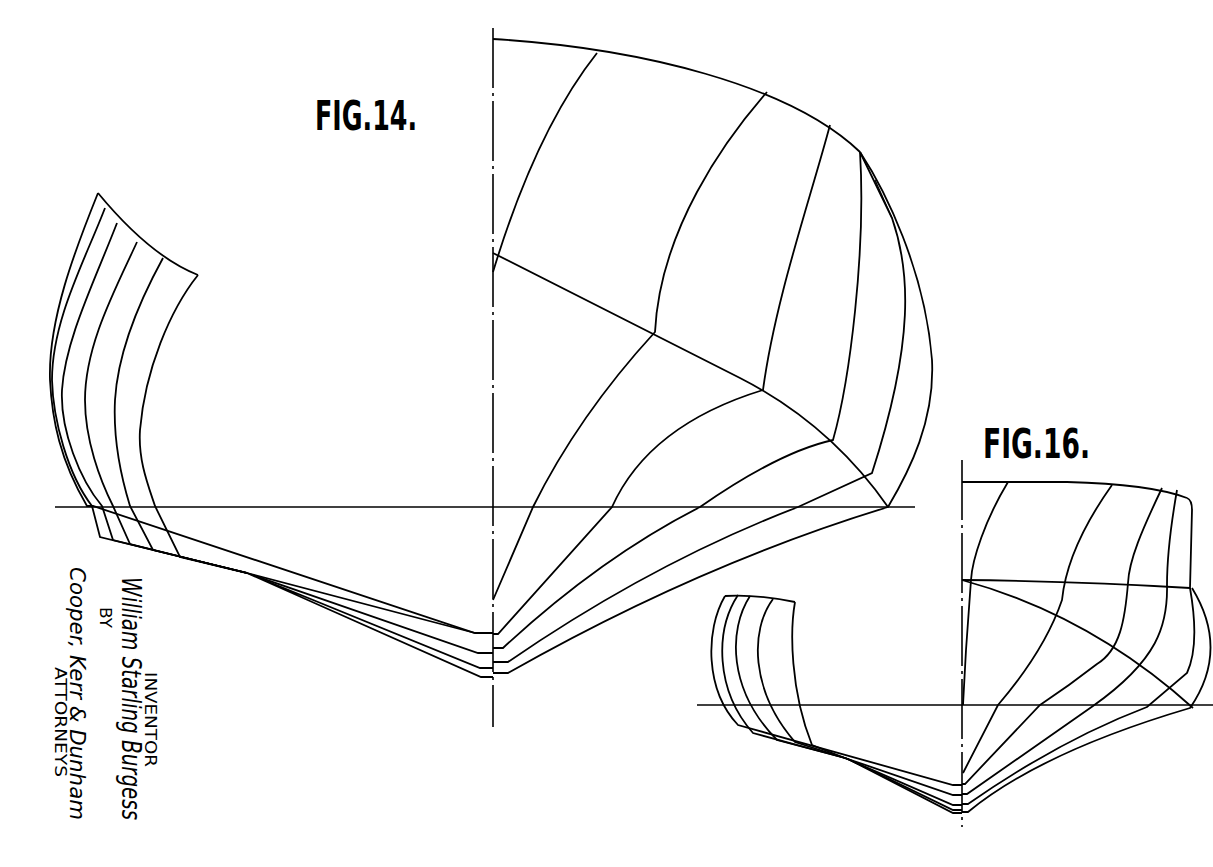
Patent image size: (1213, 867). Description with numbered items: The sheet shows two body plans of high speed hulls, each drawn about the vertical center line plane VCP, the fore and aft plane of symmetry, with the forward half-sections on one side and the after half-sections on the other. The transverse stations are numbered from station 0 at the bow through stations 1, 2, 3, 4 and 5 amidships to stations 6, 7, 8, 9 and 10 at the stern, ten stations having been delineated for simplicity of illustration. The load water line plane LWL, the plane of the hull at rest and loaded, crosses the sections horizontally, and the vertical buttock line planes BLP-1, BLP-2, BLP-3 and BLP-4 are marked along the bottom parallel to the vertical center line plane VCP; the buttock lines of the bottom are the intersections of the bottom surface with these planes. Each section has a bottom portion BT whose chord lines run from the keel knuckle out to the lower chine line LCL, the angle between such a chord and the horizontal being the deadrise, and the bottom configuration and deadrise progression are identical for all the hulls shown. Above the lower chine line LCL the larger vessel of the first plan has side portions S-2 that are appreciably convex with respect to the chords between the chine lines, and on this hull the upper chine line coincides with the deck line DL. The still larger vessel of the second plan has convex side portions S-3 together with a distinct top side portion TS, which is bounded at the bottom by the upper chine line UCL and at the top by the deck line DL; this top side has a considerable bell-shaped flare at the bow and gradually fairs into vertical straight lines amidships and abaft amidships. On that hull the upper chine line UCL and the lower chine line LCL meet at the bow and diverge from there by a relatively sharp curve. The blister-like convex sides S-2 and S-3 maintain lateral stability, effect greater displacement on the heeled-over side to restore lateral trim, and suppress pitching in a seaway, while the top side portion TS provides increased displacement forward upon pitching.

In FIG. 14, the station 0 is at (545, 162).
In FIG. 16, the station 0 is at (984, 593).
In FIG. 14, the station 1 is at (630, 346).
In FIG. 16, the station 1 is at (1037, 629).
In FIG. 14, the station 2 is at (661, 379).
In FIG. 16, the station 2 is at (1062, 636).
In FIG. 14, the station 3 is at (677, 400).
In FIG. 16, the station 3 is at (1069, 642).
In FIG. 14, the station 4 is at (699, 407).
In FIG. 16, the station 4 is at (1078, 651).
In FIG. 14, the station 5 is at (491, 412).
In FIG. 16, the station 5 is at (1086, 700).
In FIG. 14, the station 6 is at (272, 442).
In FIG. 16, the station 6 is at (830, 690).
In FIG. 14, the station 7 is at (154, 398).
In FIG. 16, the station 7 is at (841, 695).
In FIG. 14, the station 8 is at (166, 407).
In FIG. 16, the station 8 is at (849, 700).
In FIG. 14, the station 9 is at (181, 415).
In FIG. 16, the station 9 is at (860, 704).
In FIG. 14, the station 10 is at (193, 424).
In FIG. 16, the station 10 is at (876, 707).
In FIG. 14, the deck line DL is at (691, 51).
In FIG. 16, the deck line DL is at (1093, 483).
In FIG. 14, the lower chine line LCL is at (611, 278).
In FIG. 16, the lower chine line LCL is at (1071, 630).
In FIG. 16, the upper chine line UCL is at (1001, 581).
In FIG. 14, the vertical center line plane VCP is at (492, 152).
In FIG. 16, the vertical center line plane VCP is at (962, 552).
In FIG. 14, the load water line plane LWL is at (334, 506).
In FIG. 16, the load water line plane LWL is at (900, 691).
In FIG. 14, the bottom portion BT is at (578, 566).
In FIG. 16, the bottom portion BT is at (1025, 736).
In FIG. 16, the top side portion TS is at (1026, 522).
In FIG. 14, the side portion S-2 is at (601, 194).
In FIG. 16, the side portion S-3 is at (1097, 601).
In FIG. 14, the buttock line plane 1 BLP-1 is at (417, 653).
In FIG. 16, the buttock line plane 1 BLP-1 is at (912, 793).
In FIG. 14, the buttock line plane 2 BLP-2 is at (342, 620).
In FIG. 16, the buttock line plane 2 BLP-2 is at (861, 777).
In FIG. 14, the buttock line plane 3 BLP-3 is at (265, 590).
In FIG. 16, the buttock line plane 3 BLP-3 is at (812, 762).
In FIG. 14, the buttock line plane 4 BLP-4 is at (188, 577).
In FIG. 16, the buttock line plane 4 BLP-4 is at (762, 743).